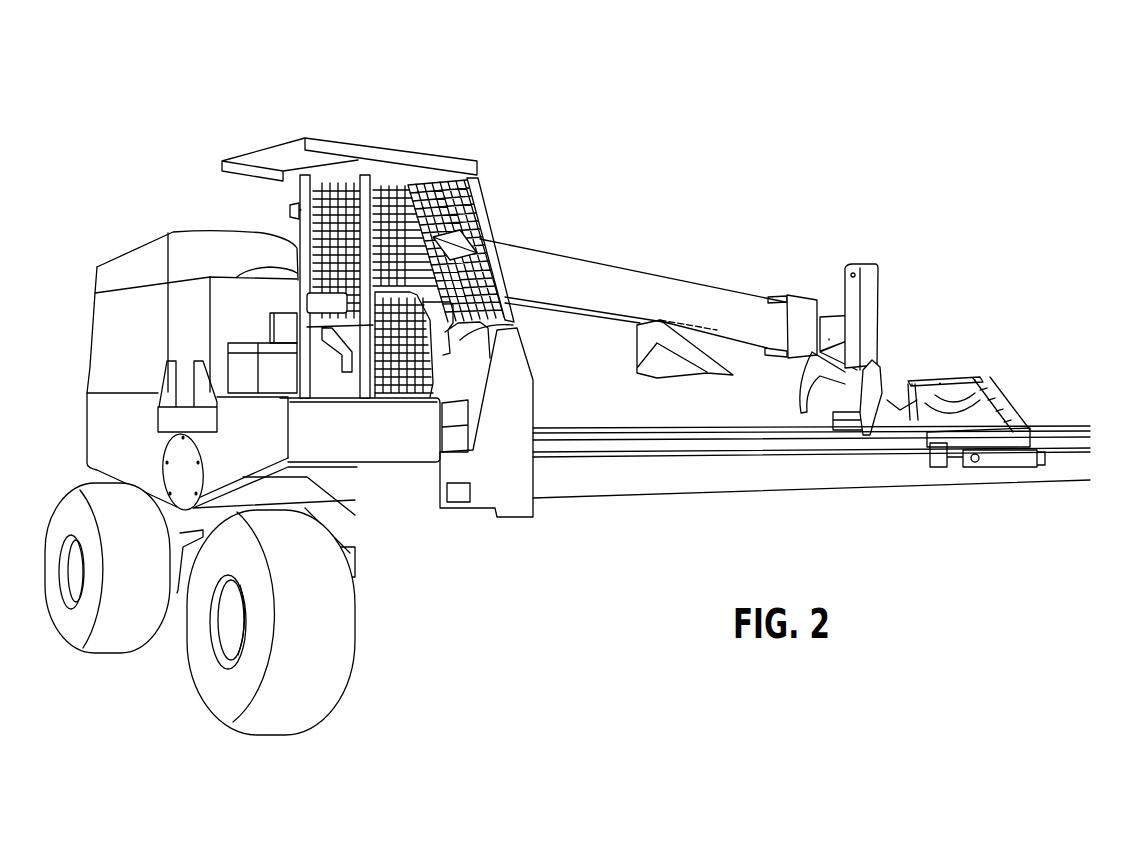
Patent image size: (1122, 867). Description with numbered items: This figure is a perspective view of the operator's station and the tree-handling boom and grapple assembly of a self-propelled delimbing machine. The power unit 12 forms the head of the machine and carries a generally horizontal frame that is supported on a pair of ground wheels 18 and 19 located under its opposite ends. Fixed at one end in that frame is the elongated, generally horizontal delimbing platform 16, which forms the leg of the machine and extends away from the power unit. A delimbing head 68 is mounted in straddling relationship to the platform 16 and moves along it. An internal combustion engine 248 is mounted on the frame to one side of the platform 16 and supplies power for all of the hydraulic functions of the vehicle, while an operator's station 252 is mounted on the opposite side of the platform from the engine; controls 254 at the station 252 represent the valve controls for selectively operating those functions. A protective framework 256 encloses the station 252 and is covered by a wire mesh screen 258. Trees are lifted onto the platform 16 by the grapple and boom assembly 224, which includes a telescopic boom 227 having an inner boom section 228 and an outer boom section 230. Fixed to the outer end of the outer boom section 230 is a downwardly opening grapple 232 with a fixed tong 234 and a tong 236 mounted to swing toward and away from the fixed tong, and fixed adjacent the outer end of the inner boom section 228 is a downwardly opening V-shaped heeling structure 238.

The power unit 12 is at (138, 227).
The internal combustion engine 248 is at (103, 331).
The operator's station 252 is at (290, 230).
The protective framework 256 is at (490, 212).
The wire mesh screen 258 is at (478, 241).
The controls 254 is at (512, 330).
The grapple and boom assembly 224 is at (595, 322).
The telescopic boom 227 is at (647, 269).
The inner boom section 228 is at (722, 292).
The V-shaped heeling structure 238 is at (710, 340).
The outer boom section 230 is at (823, 308).
The fixed tong 234 is at (878, 388).
The tong 236 is at (797, 382).
The grapple 232 is at (797, 406).
The delimbing head 68 is at (962, 379).
The delimbing platform 16 is at (700, 494).
The ground wheel 18 is at (292, 727).
The ground wheel 19 is at (128, 650).